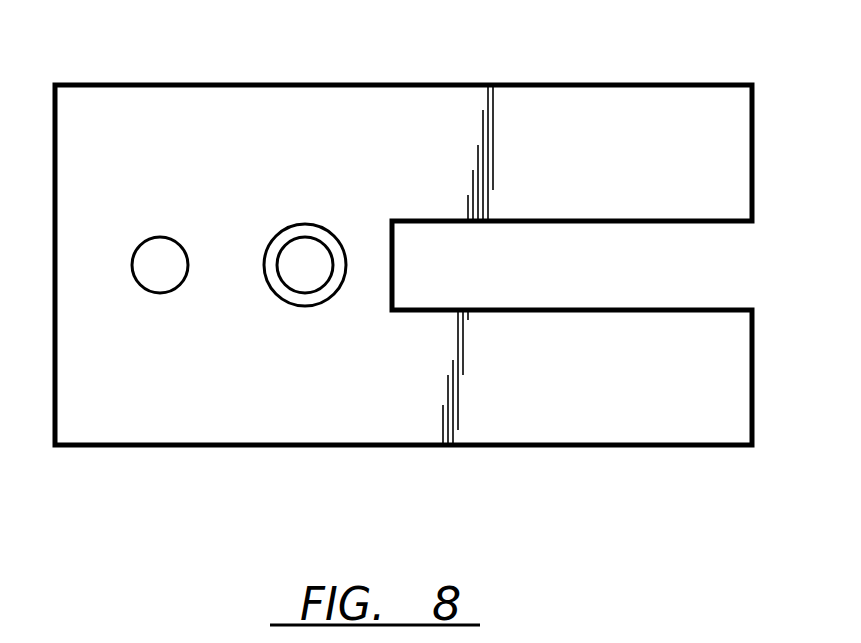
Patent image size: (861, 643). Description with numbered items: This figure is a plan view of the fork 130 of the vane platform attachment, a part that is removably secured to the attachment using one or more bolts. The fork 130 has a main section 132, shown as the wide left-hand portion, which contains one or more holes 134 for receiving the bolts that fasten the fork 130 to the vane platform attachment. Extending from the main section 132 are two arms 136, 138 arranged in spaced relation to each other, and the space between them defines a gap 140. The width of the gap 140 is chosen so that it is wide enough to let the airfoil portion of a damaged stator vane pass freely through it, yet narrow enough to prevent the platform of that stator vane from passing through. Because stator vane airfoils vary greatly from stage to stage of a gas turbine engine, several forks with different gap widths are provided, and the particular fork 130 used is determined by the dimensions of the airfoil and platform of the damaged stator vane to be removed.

The fork 130 is at (252, 189).
The main section 132 is at (380, 457).
The holes 134 is at (180, 285).
The arm 136 is at (678, 105).
The arm 138 is at (725, 397).
The gap 140 is at (765, 222).